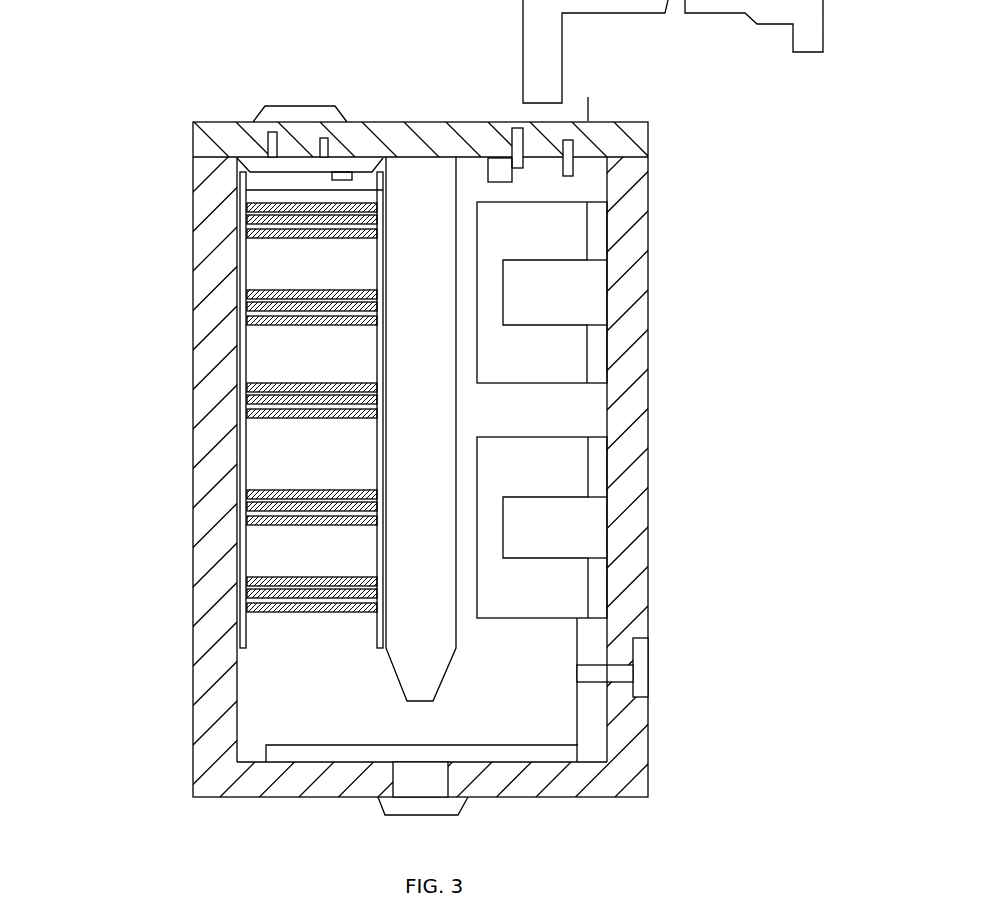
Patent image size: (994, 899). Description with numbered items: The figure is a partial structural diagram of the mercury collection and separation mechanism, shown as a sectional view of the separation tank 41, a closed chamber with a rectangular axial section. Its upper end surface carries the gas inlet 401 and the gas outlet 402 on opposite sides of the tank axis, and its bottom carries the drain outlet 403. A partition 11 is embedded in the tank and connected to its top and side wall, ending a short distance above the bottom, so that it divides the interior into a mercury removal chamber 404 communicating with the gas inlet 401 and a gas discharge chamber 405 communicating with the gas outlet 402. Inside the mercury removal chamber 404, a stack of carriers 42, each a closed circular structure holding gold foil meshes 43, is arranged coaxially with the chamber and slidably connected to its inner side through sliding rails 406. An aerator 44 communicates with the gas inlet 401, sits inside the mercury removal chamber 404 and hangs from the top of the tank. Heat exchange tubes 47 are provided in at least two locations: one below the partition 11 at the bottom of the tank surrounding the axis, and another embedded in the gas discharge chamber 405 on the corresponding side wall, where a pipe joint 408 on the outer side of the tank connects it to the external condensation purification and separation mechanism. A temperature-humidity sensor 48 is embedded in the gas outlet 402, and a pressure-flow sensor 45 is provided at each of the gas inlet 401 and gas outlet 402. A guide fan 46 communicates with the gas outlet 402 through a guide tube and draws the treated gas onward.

The partition 11 is at (278, 439).
The separation tank 41 is at (497, 449).
The carrier 42 is at (234, 551).
The gold foil mesh 43 is at (238, 301).
The aerator 44 is at (241, 137).
The pressure-flow sensor 45 is at (611, 110).
The guide fan 46 is at (673, 51).
The heat exchange tube 47 is at (509, 495).
The temperature-humidity sensor 48 is at (406, 98).
The gas inlet 401 is at (206, 80).
The gas outlet 402 is at (400, 85).
The drain outlet 403 is at (361, 810).
The mercury removal chamber 404 is at (166, 410).
The gas discharge chamber 405 is at (672, 531).
The sliding rail 406 is at (242, 418).
The pipe joint 408 is at (683, 638).